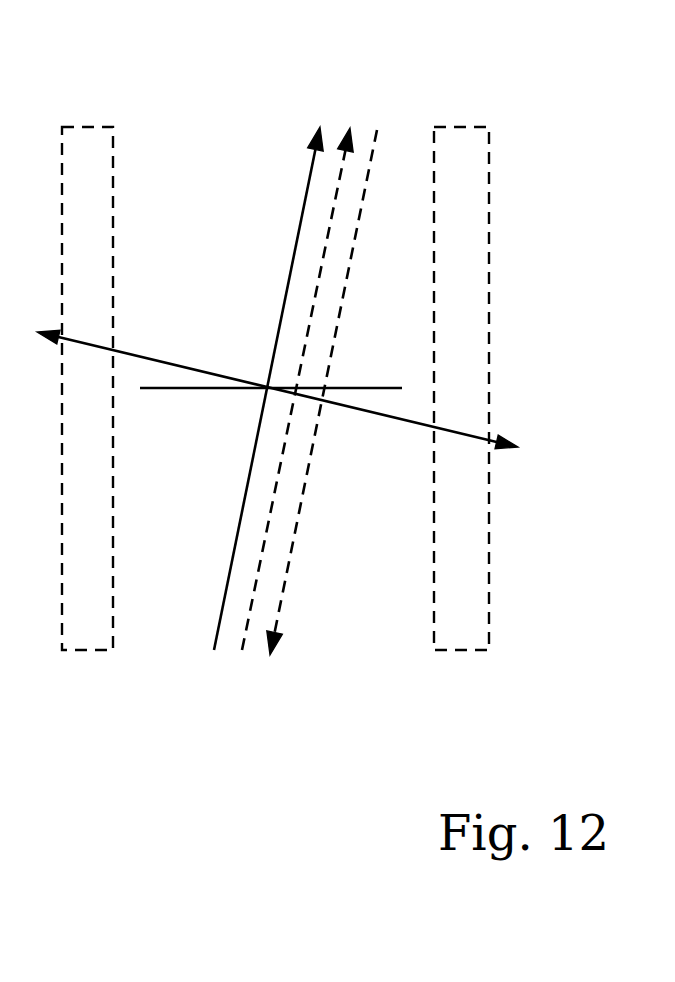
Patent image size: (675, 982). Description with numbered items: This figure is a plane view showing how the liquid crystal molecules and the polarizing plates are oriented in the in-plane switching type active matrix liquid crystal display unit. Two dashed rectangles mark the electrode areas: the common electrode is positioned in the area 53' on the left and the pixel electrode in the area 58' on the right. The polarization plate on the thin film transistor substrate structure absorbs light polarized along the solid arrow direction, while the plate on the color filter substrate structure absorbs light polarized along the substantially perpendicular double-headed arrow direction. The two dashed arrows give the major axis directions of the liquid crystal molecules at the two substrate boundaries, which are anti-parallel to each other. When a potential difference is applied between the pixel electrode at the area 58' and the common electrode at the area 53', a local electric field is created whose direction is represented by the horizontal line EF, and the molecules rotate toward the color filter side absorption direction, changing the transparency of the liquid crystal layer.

The common electrode area 53' is at (88, 425).
The pixel electrode area 58' is at (503, 356).
The line representative of local electric field direction EF is at (155, 390).